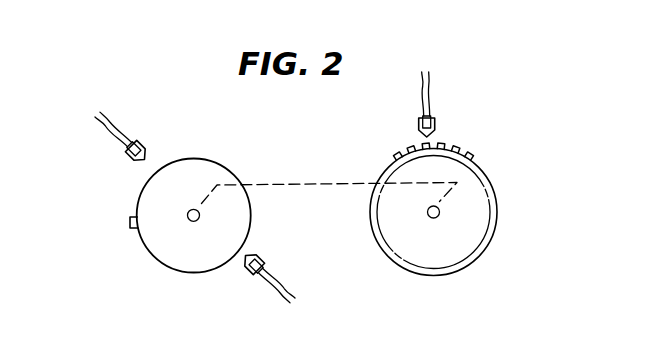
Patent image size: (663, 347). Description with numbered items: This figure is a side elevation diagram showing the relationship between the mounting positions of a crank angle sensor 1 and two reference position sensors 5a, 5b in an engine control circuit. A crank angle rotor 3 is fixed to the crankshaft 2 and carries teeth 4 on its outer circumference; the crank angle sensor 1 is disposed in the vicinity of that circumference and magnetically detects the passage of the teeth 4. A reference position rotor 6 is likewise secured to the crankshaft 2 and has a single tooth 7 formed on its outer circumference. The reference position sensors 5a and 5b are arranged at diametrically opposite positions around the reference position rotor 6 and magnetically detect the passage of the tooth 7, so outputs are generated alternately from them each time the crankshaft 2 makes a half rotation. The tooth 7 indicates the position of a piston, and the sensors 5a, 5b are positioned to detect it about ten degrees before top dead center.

The crank angle sensor 1 is at (436, 122).
The crankshaft 2 is at (194, 222).
The crank angle rotor 3 is at (475, 180).
The teeth 4 is at (463, 154).
The reference position sensor 5a is at (144, 145).
The reference position sensor 5b is at (250, 272).
The reference position rotor 6 is at (157, 245).
The tooth 7 is at (130, 221).